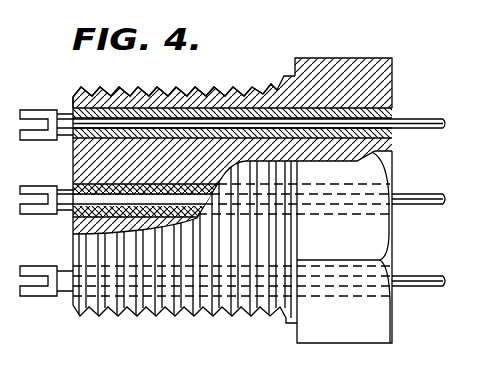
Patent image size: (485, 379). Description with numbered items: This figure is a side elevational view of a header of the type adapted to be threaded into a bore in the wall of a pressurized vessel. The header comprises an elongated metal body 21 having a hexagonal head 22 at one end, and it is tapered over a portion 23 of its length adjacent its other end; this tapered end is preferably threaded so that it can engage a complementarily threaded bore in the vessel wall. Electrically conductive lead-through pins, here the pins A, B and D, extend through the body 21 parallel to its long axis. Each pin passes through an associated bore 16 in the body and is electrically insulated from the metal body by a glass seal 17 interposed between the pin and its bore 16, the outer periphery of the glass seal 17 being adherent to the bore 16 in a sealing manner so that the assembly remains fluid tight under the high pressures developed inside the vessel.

The bore 16 is at (93, 135).
The glass seal 17 is at (75, 212).
The elongated body 21 is at (234, 75).
The hexagonal head 22 is at (357, 58).
The tapered portion 23 is at (165, 88).
The pin A is at (419, 117).
The pin B is at (428, 276).
The pin D is at (425, 193).